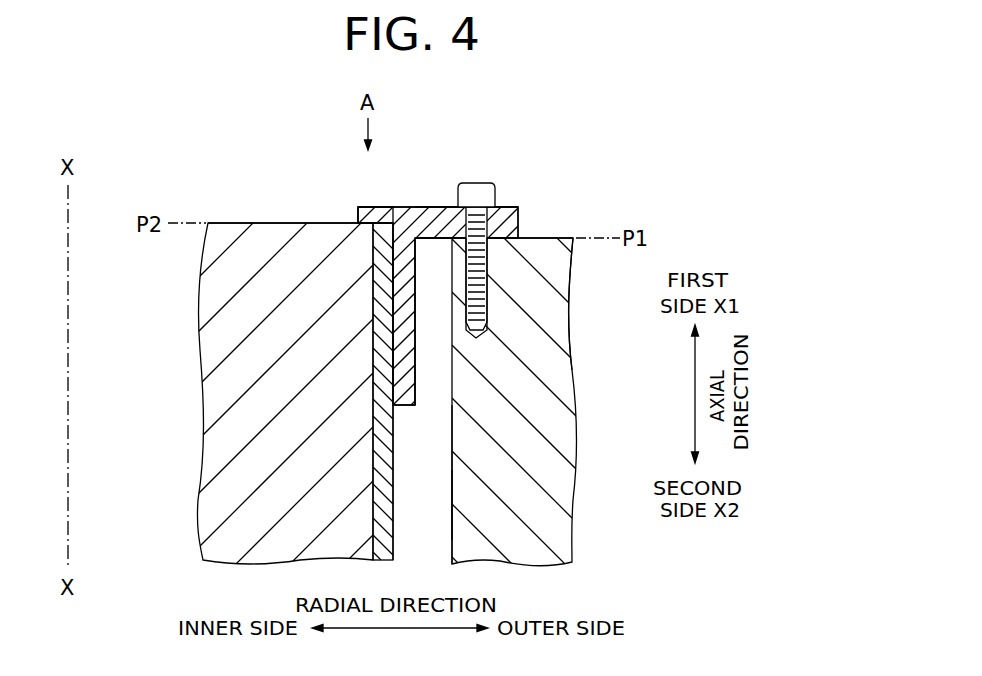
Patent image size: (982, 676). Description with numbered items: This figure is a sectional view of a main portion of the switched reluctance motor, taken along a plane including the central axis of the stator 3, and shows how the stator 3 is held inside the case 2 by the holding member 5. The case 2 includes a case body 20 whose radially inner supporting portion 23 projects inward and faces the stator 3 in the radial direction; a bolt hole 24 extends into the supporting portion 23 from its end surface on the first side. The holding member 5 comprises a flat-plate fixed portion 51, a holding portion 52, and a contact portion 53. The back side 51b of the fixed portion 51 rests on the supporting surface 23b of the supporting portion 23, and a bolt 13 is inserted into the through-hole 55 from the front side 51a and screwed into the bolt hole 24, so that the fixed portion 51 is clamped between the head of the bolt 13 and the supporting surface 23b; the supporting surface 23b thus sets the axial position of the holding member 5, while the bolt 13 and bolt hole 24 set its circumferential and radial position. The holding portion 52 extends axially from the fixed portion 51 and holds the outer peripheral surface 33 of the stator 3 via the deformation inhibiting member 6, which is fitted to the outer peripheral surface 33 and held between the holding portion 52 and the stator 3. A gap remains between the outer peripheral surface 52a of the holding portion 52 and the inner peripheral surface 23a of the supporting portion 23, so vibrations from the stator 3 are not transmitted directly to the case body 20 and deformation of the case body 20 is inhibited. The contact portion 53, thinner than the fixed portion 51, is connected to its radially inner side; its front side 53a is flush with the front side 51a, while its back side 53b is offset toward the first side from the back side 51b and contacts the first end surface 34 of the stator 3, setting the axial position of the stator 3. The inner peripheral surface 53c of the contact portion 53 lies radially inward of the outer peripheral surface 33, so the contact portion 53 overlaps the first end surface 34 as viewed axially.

The case 2 is at (581, 171).
The stator 3 is at (208, 218).
The holding member 5 is at (428, 207).
The deformation inhibiting member 6 is at (393, 480).
The bolt 13 is at (464, 231).
The case body 20 is at (574, 238).
The supporting portion 23 is at (445, 527).
The inner peripheral surface of the supporting portion 23a is at (455, 513).
The supporting surface 23b is at (548, 236).
The bolt hole 24 is at (483, 333).
The outer peripheral surface of the stator 33 is at (393, 462).
The first end surface 34 is at (268, 222).
The fixed portion 51 is at (512, 232).
The front side 51a is at (504, 207).
The back side 51b is at (441, 241).
The holding portion 52 is at (403, 409).
The outer peripheral surface of the holding portion 52a is at (415, 343).
The contact portion 53 is at (358, 207).
The front side of the contact portion 53a is at (378, 207).
The back side of the contact portion 53b is at (368, 226).
The inner peripheral surface of the contact portion 53c is at (355, 216).
The through-hole 55 is at (478, 240).